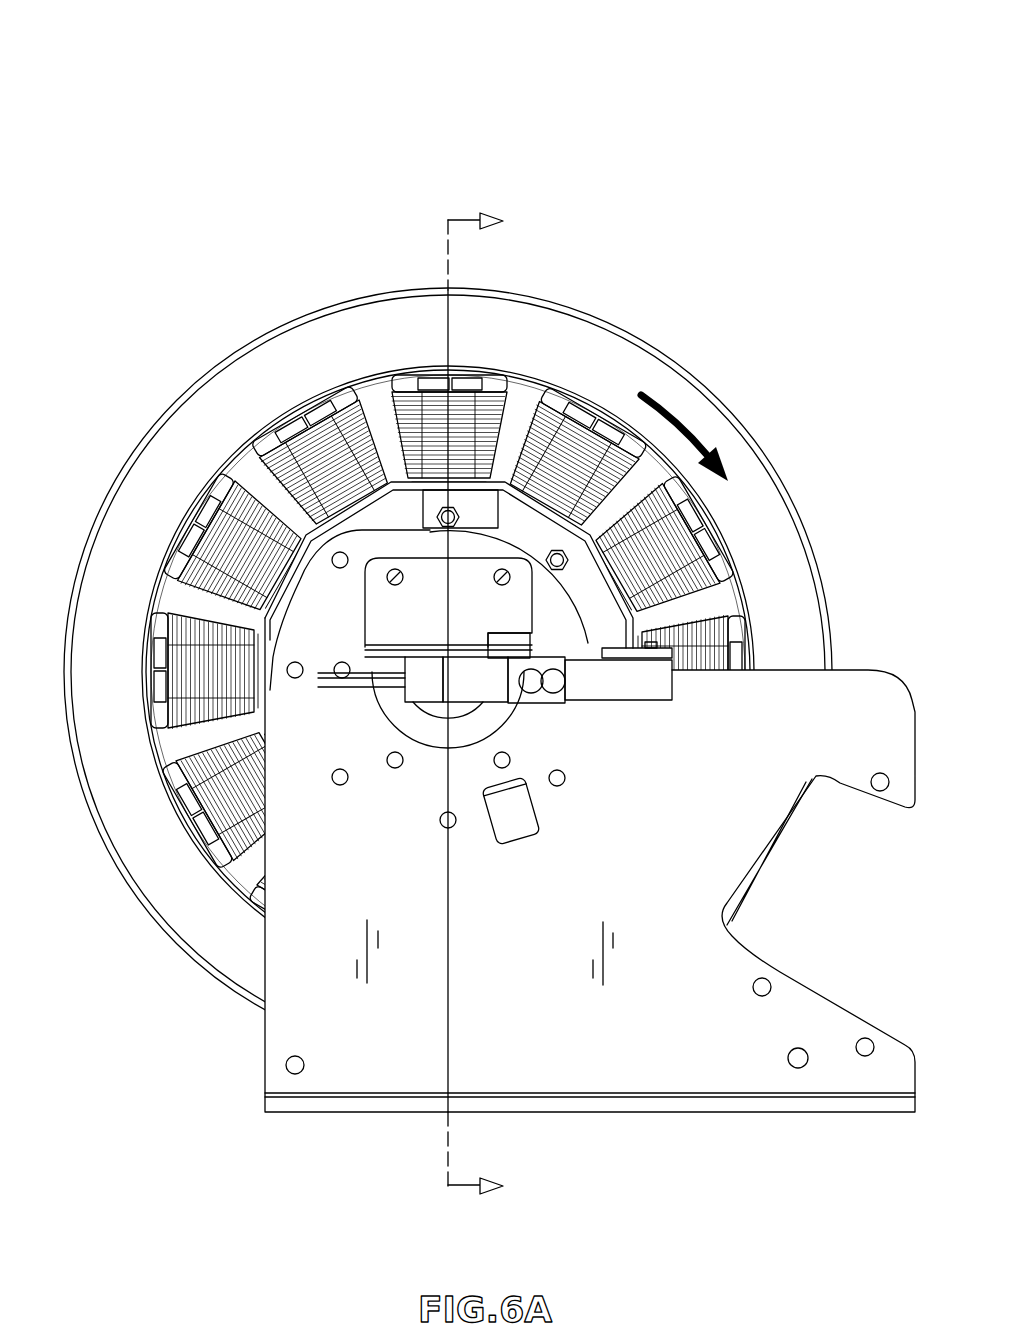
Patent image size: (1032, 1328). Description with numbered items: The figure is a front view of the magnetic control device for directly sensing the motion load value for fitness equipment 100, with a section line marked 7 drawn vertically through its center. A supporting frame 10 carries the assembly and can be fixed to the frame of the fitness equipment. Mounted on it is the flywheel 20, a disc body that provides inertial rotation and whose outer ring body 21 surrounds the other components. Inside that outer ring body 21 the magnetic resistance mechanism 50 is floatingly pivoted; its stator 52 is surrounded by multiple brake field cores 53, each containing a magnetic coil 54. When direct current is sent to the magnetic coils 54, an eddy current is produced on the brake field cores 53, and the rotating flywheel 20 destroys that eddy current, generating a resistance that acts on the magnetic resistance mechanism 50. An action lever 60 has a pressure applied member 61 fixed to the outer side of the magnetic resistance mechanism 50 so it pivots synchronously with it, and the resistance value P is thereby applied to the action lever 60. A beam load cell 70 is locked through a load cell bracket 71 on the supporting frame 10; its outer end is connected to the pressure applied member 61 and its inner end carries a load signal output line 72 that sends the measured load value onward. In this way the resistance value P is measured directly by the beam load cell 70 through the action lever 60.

The magnetic control device for directly sensing the motion load value for fitness e 100 is at (95, 21).
The supporting frame 10 is at (865, 712).
The flywheel 20 is at (661, 347).
The outer ring body 21 is at (585, 337).
The magnetic resistance mechanism 50 is at (395, 604).
The stator 52 is at (322, 542).
The brake field core 53 is at (290, 423).
The magnetic coil 54 is at (232, 545).
The action lever 60 is at (585, 592).
The pressure applied member 61 is at (660, 652).
The beam load cell 70 is at (653, 677).
The load cell bracket 71 is at (403, 620).
The load signal output line 72 is at (338, 695).
The resistance value P is at (699, 417).
The section line 7 is at (492, 704).